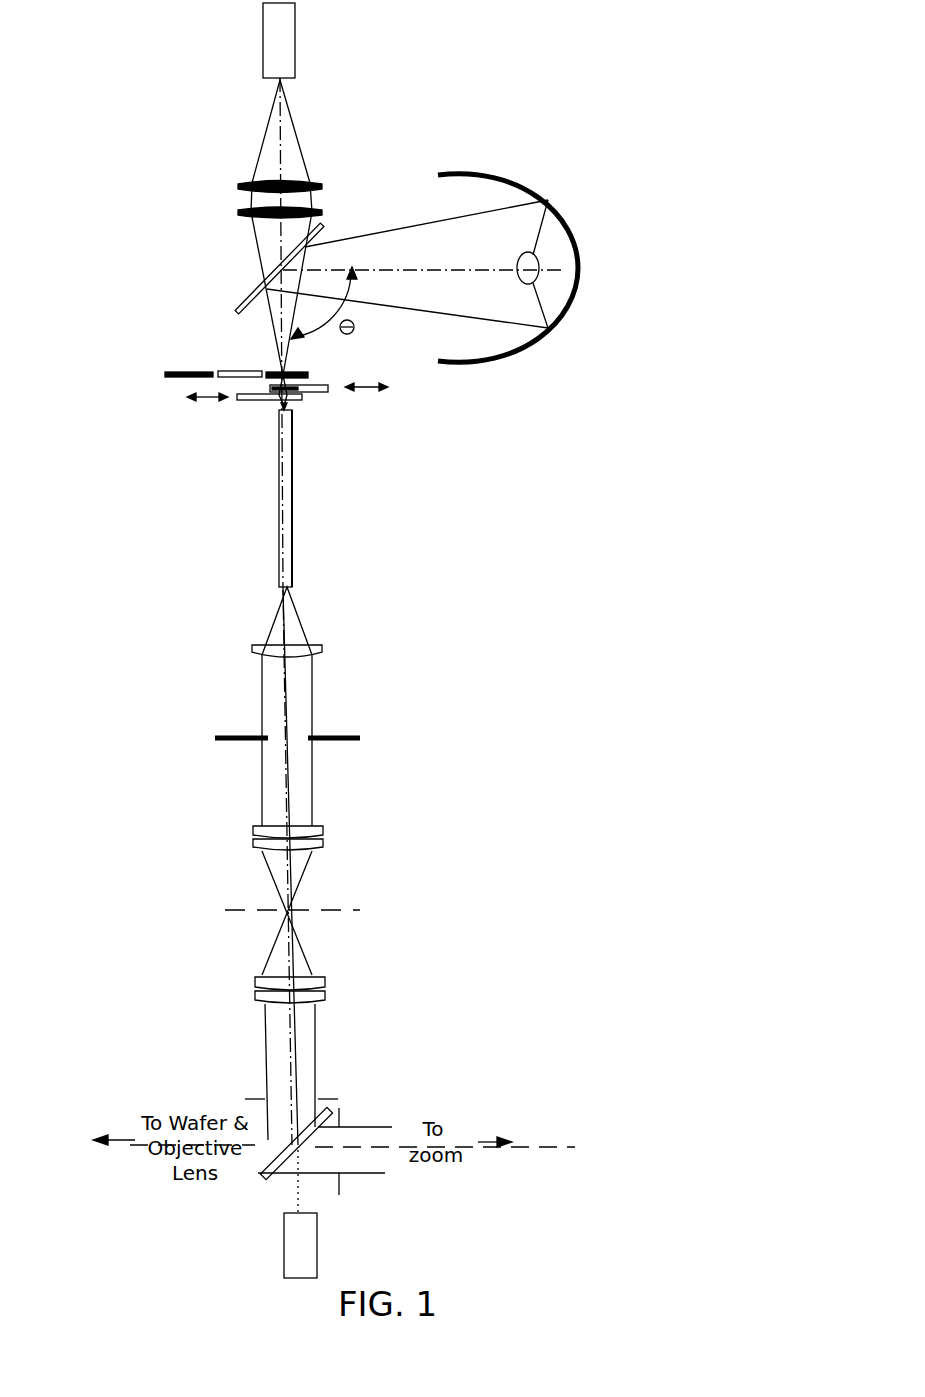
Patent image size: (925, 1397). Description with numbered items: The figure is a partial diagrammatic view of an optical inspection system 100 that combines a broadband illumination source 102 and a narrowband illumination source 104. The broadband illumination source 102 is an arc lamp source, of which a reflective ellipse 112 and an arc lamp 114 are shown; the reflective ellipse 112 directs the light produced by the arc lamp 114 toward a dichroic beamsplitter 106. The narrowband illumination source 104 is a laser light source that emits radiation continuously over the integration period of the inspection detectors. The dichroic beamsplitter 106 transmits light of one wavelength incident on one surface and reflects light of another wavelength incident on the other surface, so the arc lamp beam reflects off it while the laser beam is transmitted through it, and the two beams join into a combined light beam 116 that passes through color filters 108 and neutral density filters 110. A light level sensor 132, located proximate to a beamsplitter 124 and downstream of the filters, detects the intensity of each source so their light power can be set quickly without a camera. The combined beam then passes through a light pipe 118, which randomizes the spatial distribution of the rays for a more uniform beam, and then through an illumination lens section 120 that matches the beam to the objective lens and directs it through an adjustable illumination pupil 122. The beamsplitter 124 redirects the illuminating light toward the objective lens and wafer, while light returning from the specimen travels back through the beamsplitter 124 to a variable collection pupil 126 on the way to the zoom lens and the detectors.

The optical inspection system 100 is at (610, 517).
The broadband illumination source 102 is at (578, 378).
The narrowband illumination source 104 is at (296, 22).
The dichroic beamsplitter 106 is at (267, 290).
The color filters 108 is at (159, 373).
The neutral density filters 110 is at (256, 402).
The reflective ellipse 112 is at (532, 186).
The arc lamp 114 is at (516, 266).
The combined light beam 116 is at (250, 323).
The light pipe 118 is at (280, 485).
The illumination lens section 120 is at (230, 636).
The illumination pupil 122 is at (332, 1097).
The beamsplitter 124 is at (263, 1178).
The collection pupil 126 is at (339, 1185).
The light level sensor 132 is at (284, 1248).